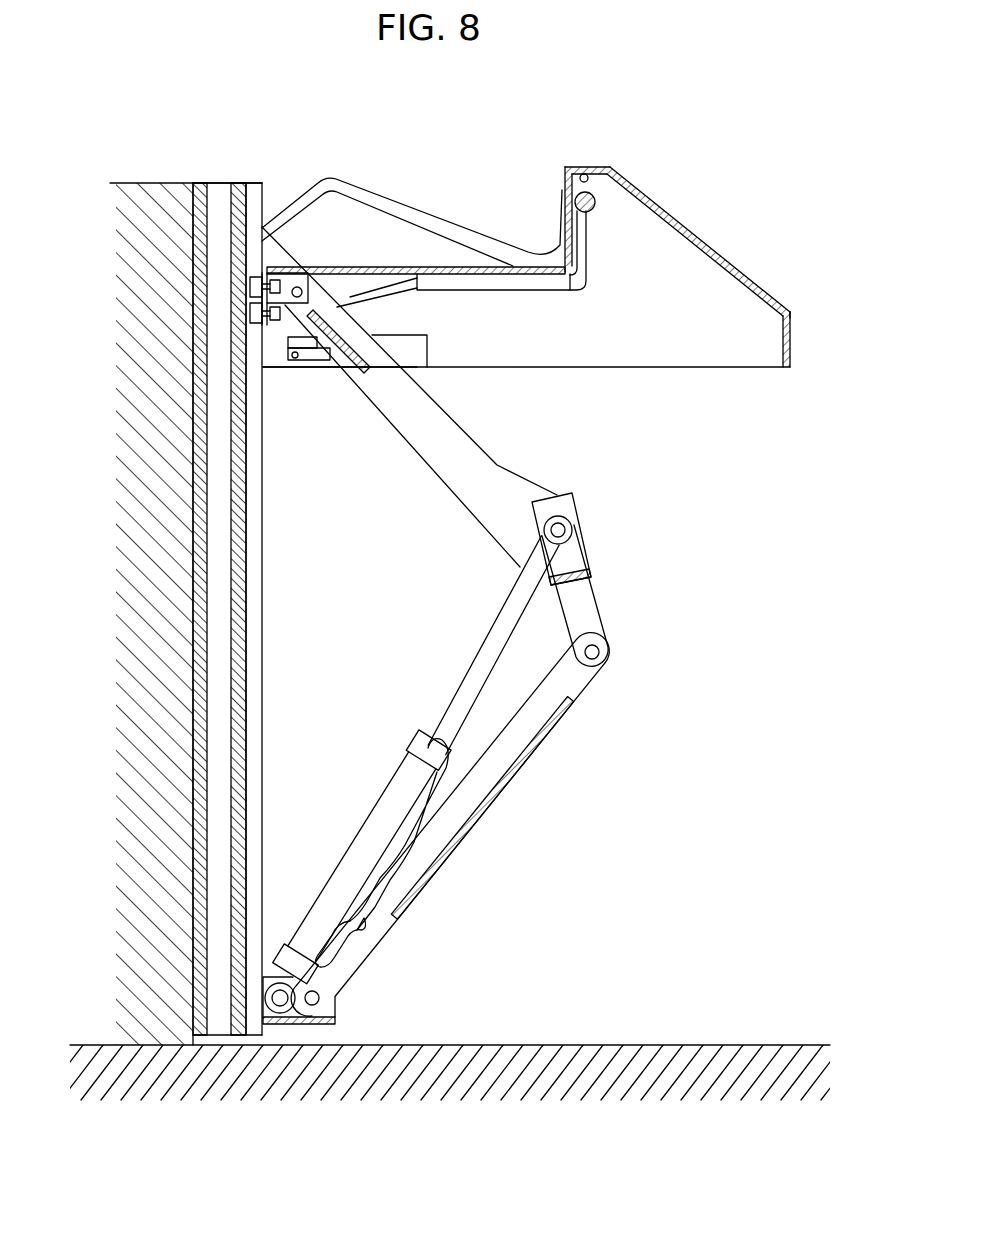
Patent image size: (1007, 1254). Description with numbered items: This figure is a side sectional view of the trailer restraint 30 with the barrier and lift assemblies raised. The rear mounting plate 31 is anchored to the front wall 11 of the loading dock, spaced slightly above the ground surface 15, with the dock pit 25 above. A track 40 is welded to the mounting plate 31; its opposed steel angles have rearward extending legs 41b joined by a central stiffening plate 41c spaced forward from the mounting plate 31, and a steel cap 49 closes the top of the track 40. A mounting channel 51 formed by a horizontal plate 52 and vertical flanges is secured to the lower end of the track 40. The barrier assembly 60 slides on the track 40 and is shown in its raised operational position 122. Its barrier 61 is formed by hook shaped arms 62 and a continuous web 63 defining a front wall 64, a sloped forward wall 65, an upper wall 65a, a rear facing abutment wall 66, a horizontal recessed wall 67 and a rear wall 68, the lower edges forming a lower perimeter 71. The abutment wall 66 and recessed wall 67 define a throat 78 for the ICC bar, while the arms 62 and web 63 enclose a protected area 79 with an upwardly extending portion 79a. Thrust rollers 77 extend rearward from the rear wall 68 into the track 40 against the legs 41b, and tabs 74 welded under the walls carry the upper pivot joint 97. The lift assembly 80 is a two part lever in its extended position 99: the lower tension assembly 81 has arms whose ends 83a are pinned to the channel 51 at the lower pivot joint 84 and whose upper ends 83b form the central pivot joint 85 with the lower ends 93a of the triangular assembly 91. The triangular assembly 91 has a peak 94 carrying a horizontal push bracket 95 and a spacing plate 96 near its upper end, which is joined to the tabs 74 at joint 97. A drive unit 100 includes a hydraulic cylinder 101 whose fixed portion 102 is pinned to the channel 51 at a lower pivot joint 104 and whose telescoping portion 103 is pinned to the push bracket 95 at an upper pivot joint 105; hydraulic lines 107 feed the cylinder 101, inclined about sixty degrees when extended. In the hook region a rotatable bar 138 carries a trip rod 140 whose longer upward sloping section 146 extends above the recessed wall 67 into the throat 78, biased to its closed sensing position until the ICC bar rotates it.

The front wall 11 is at (193, 253).
The ground surface 15 is at (630, 1045).
The pit 25 is at (148, 183).
The trailer restraint 30 is at (490, 561).
The rear mounting plate 31 is at (193, 522).
The track 40 is at (285, 576).
The rearward extending leg 41b is at (240, 538).
The central stiffening plate 41c is at (250, 633).
The steel cap 49 is at (237, 183).
The mounting channel 51 is at (330, 992).
The horizontal plate 52 is at (320, 1024).
The barrier assembly 60 is at (553, 246).
The barrier 61 is at (760, 285).
The hook shaped arm 62 is at (455, 318).
The continuous web 63 is at (789, 315).
The front wall 64 is at (792, 345).
The sloped forward wall 65 is at (716, 241).
The upper wall 65a is at (590, 168).
The rear facing abutment wall 66 is at (563, 188).
The horizontal recessed wall 67 is at (392, 268).
The rear wall 68 is at (250, 287).
The lower perimeter 71 is at (627, 368).
The lift bracket 74 is at (307, 269).
The thrust roller 77 is at (250, 313).
The throat 78 is at (522, 224).
The protected area 79 is at (727, 340).
The upwardly extending portion 79a is at (653, 190).
The lift assembly 80 is at (491, 833).
The lower tension assembly 81 is at (480, 792).
The lower end of tension arm 83a is at (374, 997).
The upper end of tension arm 83b is at (583, 675).
The lower pivot joint 84 is at (327, 990).
The central pivot joint 85 is at (597, 652).
The triangular push assembly 91 is at (467, 453).
The lower end of triangular arm 93a is at (620, 595).
The peak 94 is at (612, 517).
The push bracket 95 is at (590, 587).
The spacing plate 96 is at (355, 373).
The upper pivot joint 97 is at (302, 288).
The extended position 99 is at (415, 397).
The drive unit 100 is at (412, 774).
The hydraulic cylinder 101 is at (405, 780).
The fixed portion 102 is at (348, 847).
The telescoping portion 103 is at (492, 640).
The lower pivot joint 104 is at (267, 975).
The upper pivot joint 105 is at (567, 528).
The hydraulic line 107 is at (438, 783).
The raised operational position 122 is at (553, 246).
The rotatable bar 138 is at (598, 194).
The trip rod 140 is at (412, 202).
The longer upward sloping section 146 is at (447, 232).